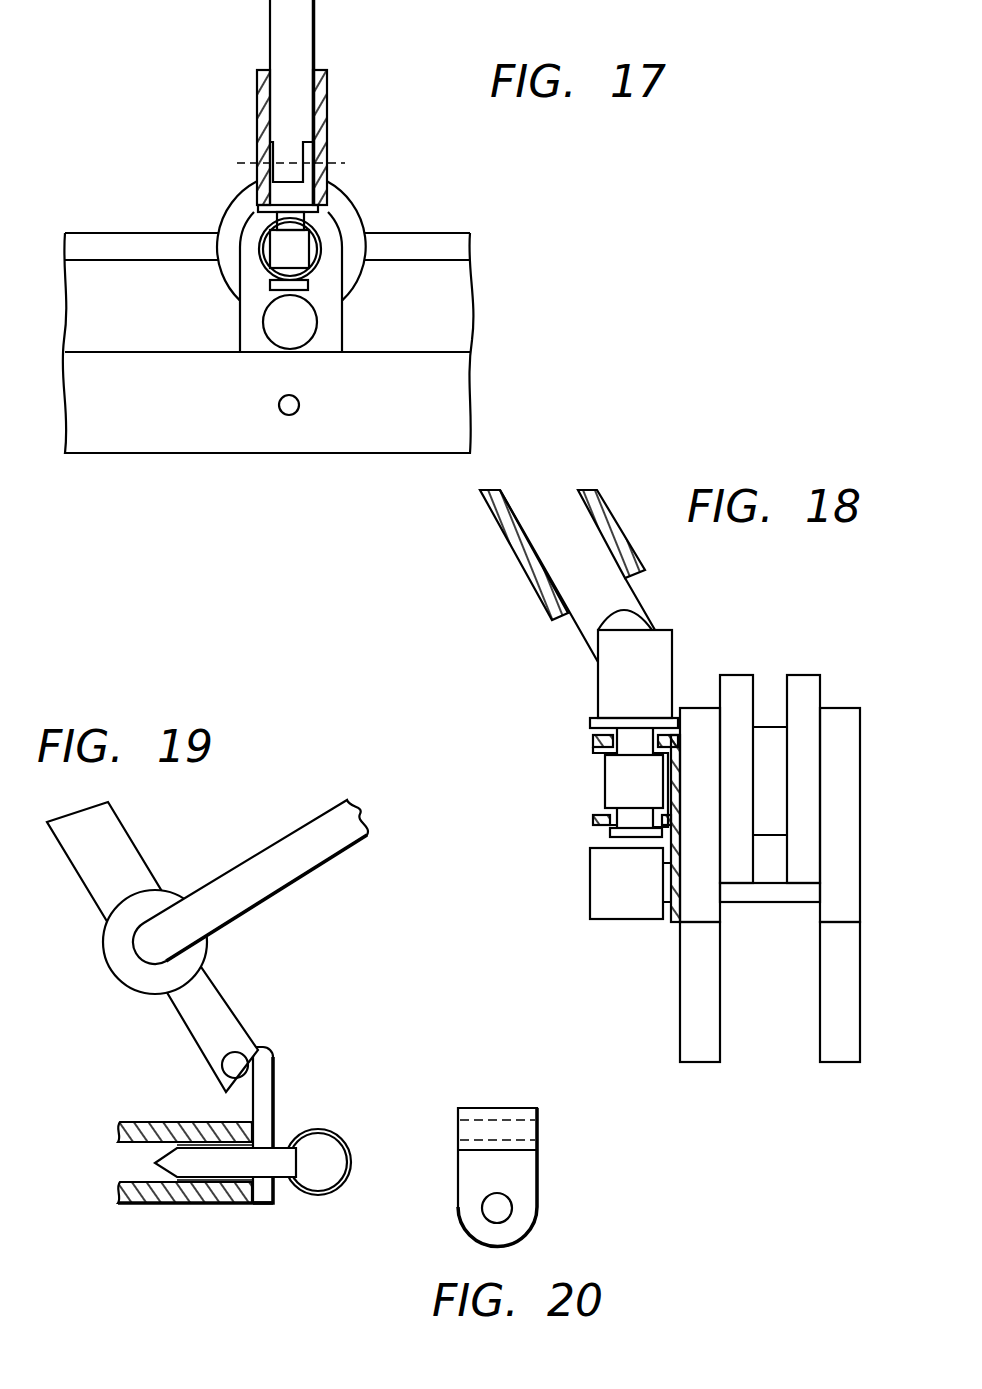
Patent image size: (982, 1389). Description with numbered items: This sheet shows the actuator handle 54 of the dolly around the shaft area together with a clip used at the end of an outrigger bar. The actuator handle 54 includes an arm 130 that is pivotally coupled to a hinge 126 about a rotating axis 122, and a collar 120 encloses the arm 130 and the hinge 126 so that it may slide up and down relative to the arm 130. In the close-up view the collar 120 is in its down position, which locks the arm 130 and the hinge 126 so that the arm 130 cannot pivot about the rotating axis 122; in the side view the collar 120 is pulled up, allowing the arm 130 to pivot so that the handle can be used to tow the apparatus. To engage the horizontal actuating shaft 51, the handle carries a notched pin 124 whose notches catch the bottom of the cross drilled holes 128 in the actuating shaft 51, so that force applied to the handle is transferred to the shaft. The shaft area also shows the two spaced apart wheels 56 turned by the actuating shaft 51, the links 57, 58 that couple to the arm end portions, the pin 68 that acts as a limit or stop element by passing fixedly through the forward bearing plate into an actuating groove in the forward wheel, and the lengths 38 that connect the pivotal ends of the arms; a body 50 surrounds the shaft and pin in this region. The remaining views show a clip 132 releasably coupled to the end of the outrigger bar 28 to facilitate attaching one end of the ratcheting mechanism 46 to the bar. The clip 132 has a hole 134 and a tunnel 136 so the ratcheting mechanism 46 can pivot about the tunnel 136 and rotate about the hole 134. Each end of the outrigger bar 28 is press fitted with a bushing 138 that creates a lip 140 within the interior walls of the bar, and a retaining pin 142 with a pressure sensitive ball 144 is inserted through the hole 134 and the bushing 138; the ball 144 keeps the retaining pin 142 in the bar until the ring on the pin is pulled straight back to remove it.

In FIG. 17, the arm 130 is at (280, 28).
In FIG. 18, the arm 130 is at (618, 593).
In FIG. 17, the actuator handle 54 is at (338, 28).
In FIG. 17, the collar 120 is at (257, 116).
In FIG. 18, the collar 120 is at (523, 582).
In FIG. 17, the rotating axis 122 is at (340, 163).
In FIG. 18, the rotating axis 122 is at (615, 682).
In FIG. 17, the hinge 126 is at (277, 196).
In FIG. 17, the link 58 is at (100, 233).
In FIG. 17, the spaced apart wheel 56 is at (354, 207).
In FIG. 18, the spaced apart wheel 56 is at (795, 675).
In FIG. 17, the link 57 is at (430, 233).
In FIG. 17, the actuating shaft 51 is at (250, 254).
In FIG. 18, the actuating shaft 51 is at (593, 818).
In FIG. 17, the housing 50 is at (240, 340).
In FIG. 18, the housing 50 is at (708, 708).
In FIG. 17, the notched pin 124 is at (310, 284).
In FIG. 18, the notched pin 124 is at (605, 780).
In FIG. 17, the pin 68 is at (318, 322).
In FIG. 18, the pin 68 is at (620, 920).
In FIG. 17, the length 38 is at (150, 433).
In FIG. 18, the length 38 is at (818, 965).
In FIG. 18, the cross drilled holes 128 is at (593, 748).
In FIG. 19, the ratcheting mechanism 46 is at (210, 936).
In FIG. 19, the clip 132 is at (260, 1053).
In FIG. 20, the clip 132 is at (538, 1170).
In FIG. 19, the bushing 138 is at (220, 1138).
In FIG. 19, the retaining pin 142 is at (283, 1150).
In FIG. 19, the pressure sensitive ball 144 is at (187, 1185).
In FIG. 19, the lip 140 is at (243, 1200).
In FIG. 19, the outrigger bar 28 is at (213, 1203).
In FIG. 20, the tunnel 136 is at (530, 1130).
In FIG. 20, the hole 134 is at (497, 1208).